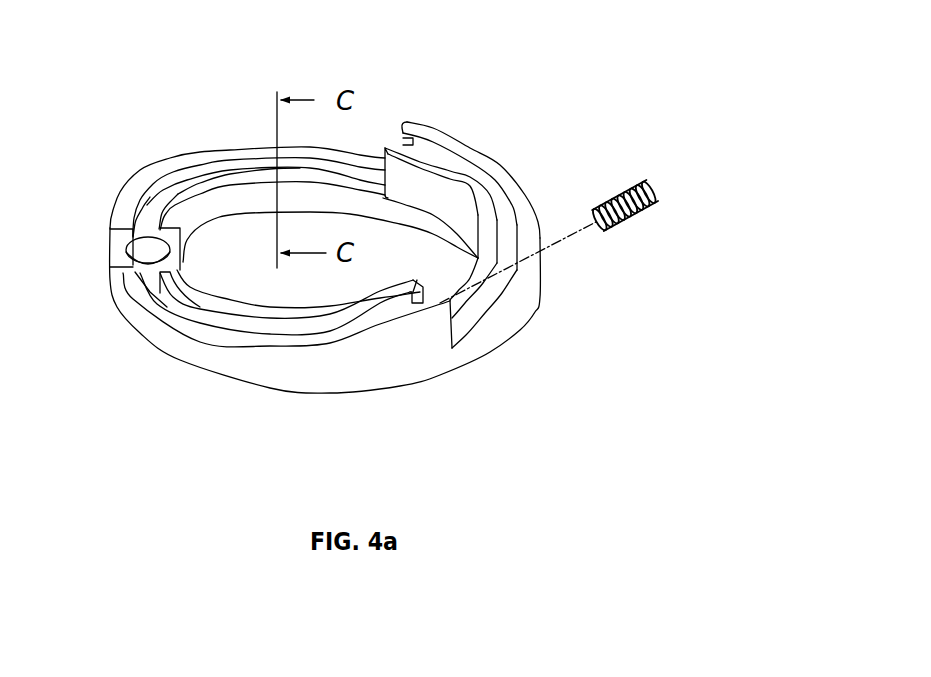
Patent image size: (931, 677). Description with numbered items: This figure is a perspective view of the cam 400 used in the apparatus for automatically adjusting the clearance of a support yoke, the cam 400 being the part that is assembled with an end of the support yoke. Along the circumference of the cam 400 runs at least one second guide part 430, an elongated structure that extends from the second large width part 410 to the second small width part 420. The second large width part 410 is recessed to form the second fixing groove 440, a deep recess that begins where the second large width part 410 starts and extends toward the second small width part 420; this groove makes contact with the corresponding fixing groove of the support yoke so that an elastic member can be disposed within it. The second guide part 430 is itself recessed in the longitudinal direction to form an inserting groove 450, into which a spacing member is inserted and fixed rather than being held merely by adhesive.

The cam 400 is at (453, 97).
The second large width part 410 is at (430, 350).
The second small width part 420 is at (124, 312).
The second guide part 430 is at (257, 351).
The second fixing groove 440 is at (148, 250).
The inserting groove 450 is at (153, 232).